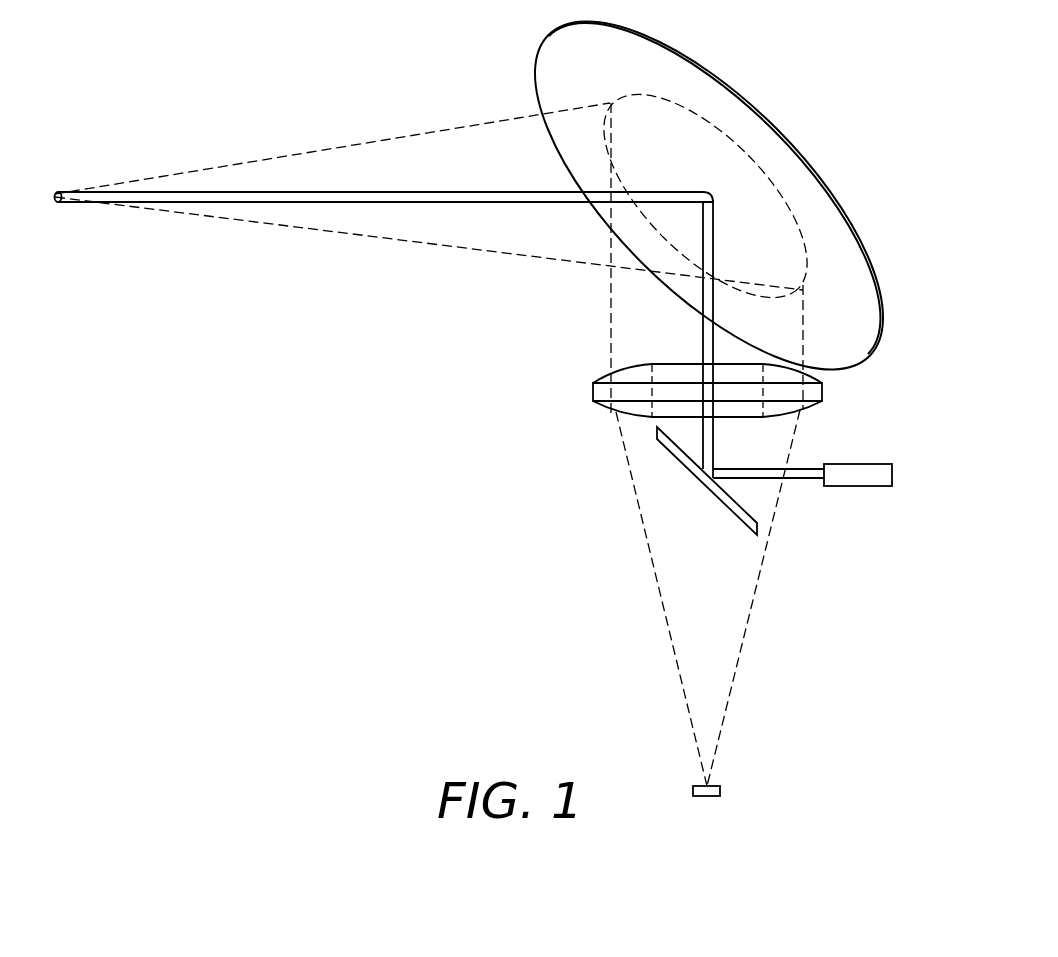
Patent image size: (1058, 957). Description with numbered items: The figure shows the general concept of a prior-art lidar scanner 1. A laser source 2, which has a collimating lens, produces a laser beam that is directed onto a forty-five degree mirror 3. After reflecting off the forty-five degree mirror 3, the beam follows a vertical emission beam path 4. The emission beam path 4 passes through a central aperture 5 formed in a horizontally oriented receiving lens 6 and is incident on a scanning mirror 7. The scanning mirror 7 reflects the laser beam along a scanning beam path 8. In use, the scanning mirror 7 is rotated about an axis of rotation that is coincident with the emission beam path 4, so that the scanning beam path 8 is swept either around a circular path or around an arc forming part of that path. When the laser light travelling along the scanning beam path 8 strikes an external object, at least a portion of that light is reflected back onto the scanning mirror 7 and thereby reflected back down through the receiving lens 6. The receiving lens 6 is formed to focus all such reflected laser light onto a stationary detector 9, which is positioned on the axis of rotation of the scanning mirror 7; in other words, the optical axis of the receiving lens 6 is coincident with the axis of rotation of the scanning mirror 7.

The lidar scanner 1 is at (380, 411).
The laser source 2 is at (892, 477).
The 45° mirror 3 is at (733, 514).
The emission beam path 4 is at (713, 231).
The central aperture 5 is at (662, 410).
The receiving lens 6 is at (593, 390).
The scanning mirror 7 is at (750, 97).
The scanning beam path 8 is at (306, 192).
The detector 9 is at (720, 791).